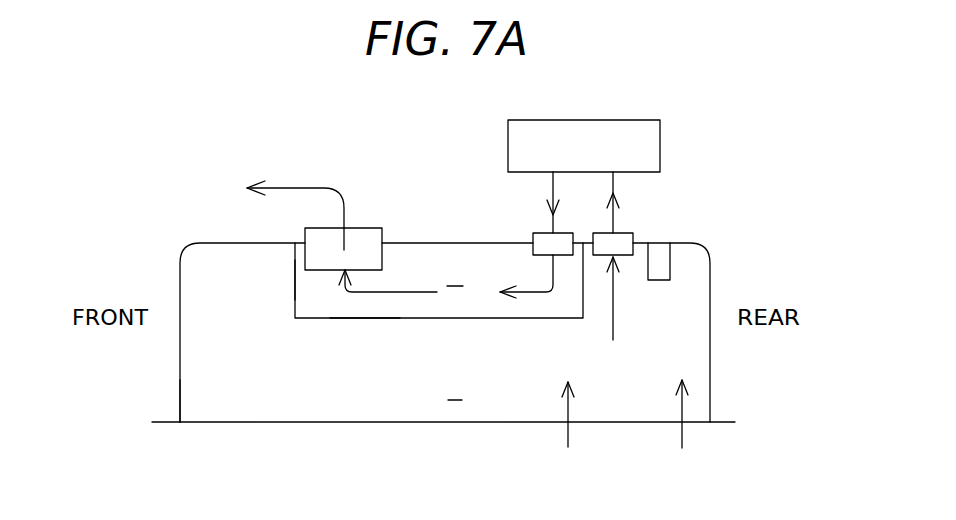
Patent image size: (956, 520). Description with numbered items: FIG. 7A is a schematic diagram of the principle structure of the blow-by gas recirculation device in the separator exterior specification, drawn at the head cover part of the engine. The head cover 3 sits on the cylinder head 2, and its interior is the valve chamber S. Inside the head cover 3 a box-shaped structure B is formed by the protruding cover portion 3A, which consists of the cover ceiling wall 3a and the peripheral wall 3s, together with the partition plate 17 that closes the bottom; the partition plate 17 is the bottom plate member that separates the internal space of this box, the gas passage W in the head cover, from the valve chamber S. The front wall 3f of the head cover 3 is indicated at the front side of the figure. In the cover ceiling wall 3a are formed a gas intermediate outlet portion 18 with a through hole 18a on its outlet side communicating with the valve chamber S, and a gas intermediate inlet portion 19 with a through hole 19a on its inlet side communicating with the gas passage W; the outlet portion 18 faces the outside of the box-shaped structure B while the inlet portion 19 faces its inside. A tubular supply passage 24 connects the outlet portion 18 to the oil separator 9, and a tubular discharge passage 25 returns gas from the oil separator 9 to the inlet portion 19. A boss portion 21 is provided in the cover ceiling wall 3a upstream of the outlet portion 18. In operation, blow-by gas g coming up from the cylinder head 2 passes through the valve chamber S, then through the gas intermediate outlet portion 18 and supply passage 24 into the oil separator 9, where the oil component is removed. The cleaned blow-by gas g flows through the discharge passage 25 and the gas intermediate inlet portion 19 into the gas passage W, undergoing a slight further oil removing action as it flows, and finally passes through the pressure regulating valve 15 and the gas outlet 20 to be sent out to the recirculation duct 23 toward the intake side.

The cylinder head 2 is at (717, 422).
The head cover 3 is at (435, 290).
The cover ceiling wall 3a is at (415, 243).
The front wall of case 3f is at (177, 380).
The peripheral wall 3s is at (295, 277).
The protruding cover portion 3A is at (395, 313).
The box-shaped structure B is at (439, 280).
The oil separator 9 is at (652, 130).
The pressure regulating valve 15 is at (358, 238).
The partition plate 17 is at (353, 318).
The gas intermediate outlet portion 18 is at (684, 198).
The through hole 18a is at (630, 237).
The gas intermediate inlet portion 19 is at (505, 221).
The through hole 19a is at (548, 237).
The gas outlet 20 is at (345, 227).
The boss portion 21 is at (660, 282).
The recirculation duct 23 is at (285, 188).
The supply passage 24 is at (617, 190).
The discharge passage 25 is at (552, 187).
The gas passage in the head cover W is at (455, 273).
The valve chamber S is at (455, 387).
The blow-by gas g is at (390, 293).